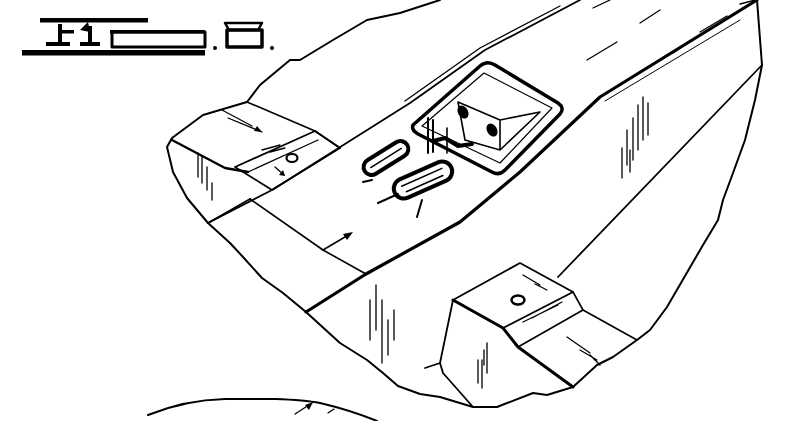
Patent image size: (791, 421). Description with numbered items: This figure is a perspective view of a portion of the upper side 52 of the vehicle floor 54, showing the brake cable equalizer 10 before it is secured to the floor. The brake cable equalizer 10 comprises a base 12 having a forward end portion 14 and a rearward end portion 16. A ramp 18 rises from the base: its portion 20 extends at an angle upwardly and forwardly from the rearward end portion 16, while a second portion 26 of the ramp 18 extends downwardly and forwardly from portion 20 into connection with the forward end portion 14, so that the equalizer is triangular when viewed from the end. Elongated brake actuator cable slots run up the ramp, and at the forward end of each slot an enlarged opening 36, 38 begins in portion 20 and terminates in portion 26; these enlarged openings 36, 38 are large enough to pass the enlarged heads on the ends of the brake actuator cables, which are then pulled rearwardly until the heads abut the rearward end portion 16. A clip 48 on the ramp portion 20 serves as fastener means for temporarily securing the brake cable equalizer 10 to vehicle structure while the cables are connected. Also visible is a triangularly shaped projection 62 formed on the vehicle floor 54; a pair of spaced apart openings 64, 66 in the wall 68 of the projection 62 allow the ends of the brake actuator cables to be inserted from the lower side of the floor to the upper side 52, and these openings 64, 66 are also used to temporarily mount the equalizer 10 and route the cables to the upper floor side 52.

The brake cable equalizer 10 is at (323, 250).
The base 12 is at (417, 217).
The forward end portion 14 is at (351, 236).
The rearward end portion 16 is at (457, 185).
The ramp 18 is at (389, 132).
The portion 20 is at (430, 188).
The second portion 26 is at (371, 143).
The enlarged opening 36 is at (378, 203).
The enlarged opening 38 is at (363, 182).
The clip 48 is at (436, 122).
The upper side 52 is at (597, 13).
The vehicle floor 54 is at (665, 308).
The triangularly shaped projection 62 is at (514, 96).
The opening 64 is at (460, 108).
The opening 66 is at (500, 150).
The wall 68 is at (482, 117).